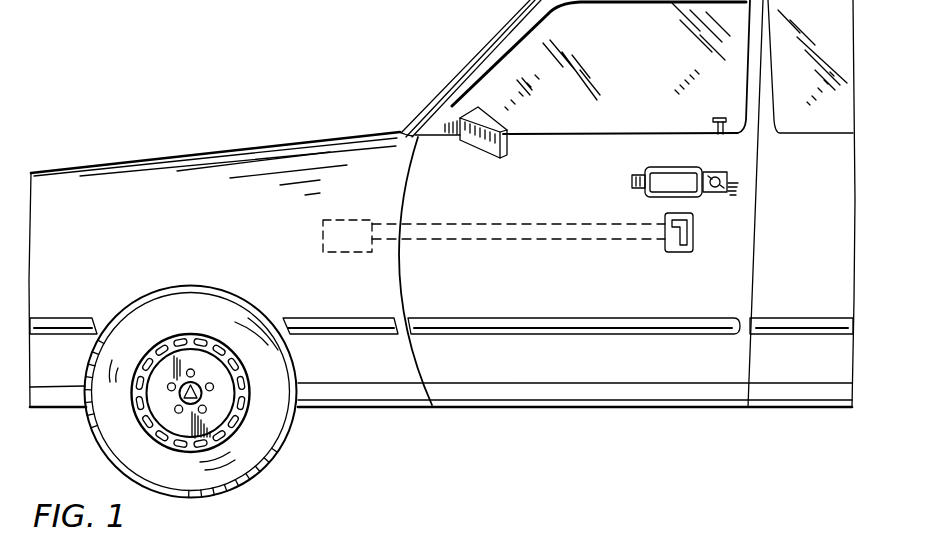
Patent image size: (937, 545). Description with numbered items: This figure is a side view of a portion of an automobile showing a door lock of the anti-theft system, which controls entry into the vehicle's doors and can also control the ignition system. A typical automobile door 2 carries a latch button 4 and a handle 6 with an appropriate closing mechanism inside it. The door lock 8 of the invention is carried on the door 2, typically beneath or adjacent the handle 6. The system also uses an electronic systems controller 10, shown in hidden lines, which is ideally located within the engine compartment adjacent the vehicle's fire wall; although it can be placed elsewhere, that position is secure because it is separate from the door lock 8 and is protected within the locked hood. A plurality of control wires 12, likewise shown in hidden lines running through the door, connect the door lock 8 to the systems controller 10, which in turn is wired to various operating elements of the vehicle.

The automobile door 2 is at (588, 370).
The latch button 4 is at (713, 123).
The handle 6 is at (733, 178).
The door lock 8 is at (693, 246).
The electronic systems controller 10 is at (323, 240).
The control wires 12 is at (533, 238).